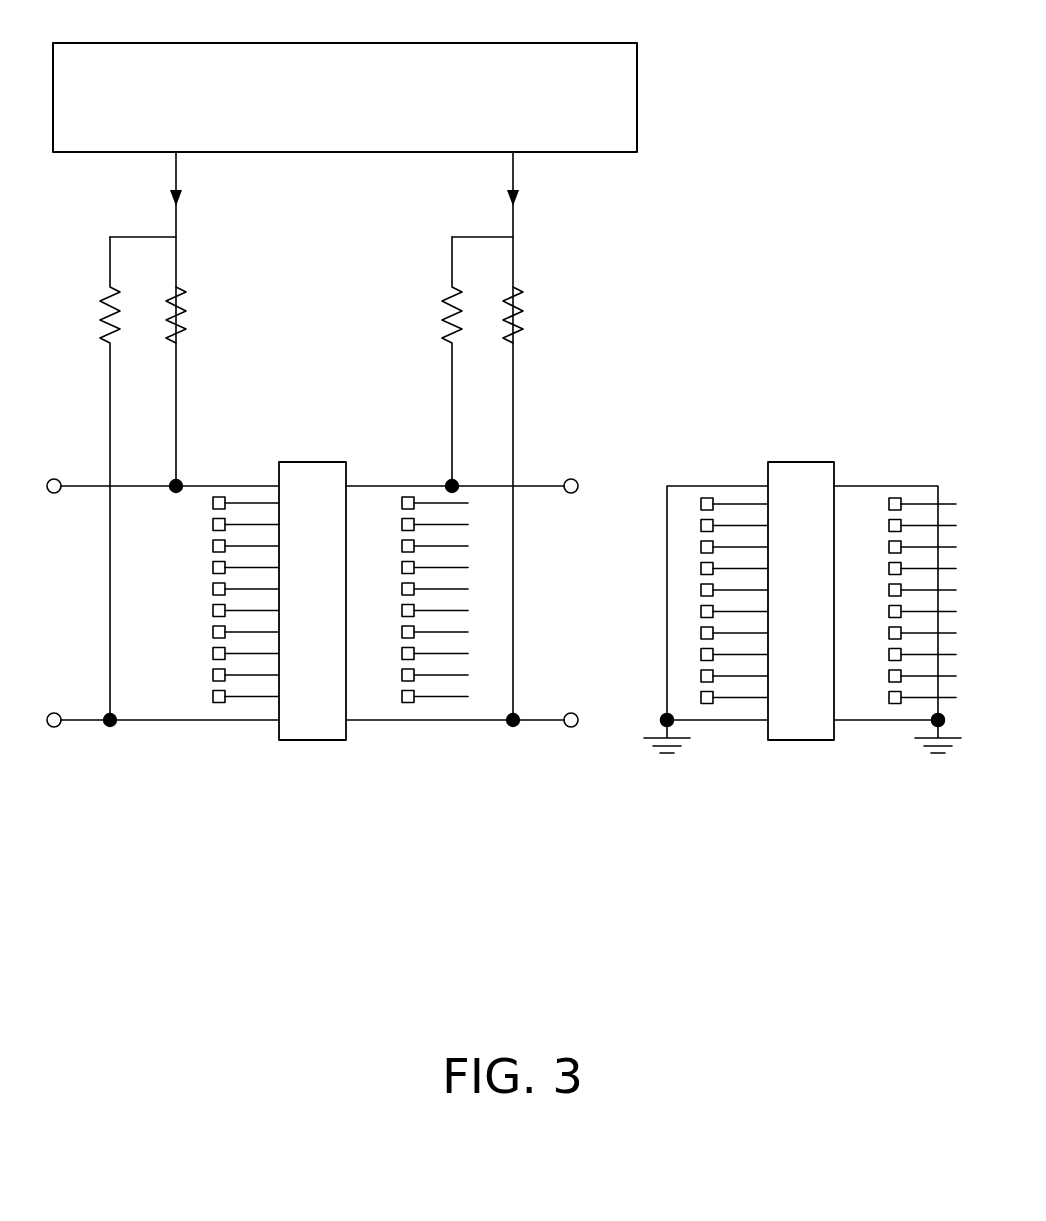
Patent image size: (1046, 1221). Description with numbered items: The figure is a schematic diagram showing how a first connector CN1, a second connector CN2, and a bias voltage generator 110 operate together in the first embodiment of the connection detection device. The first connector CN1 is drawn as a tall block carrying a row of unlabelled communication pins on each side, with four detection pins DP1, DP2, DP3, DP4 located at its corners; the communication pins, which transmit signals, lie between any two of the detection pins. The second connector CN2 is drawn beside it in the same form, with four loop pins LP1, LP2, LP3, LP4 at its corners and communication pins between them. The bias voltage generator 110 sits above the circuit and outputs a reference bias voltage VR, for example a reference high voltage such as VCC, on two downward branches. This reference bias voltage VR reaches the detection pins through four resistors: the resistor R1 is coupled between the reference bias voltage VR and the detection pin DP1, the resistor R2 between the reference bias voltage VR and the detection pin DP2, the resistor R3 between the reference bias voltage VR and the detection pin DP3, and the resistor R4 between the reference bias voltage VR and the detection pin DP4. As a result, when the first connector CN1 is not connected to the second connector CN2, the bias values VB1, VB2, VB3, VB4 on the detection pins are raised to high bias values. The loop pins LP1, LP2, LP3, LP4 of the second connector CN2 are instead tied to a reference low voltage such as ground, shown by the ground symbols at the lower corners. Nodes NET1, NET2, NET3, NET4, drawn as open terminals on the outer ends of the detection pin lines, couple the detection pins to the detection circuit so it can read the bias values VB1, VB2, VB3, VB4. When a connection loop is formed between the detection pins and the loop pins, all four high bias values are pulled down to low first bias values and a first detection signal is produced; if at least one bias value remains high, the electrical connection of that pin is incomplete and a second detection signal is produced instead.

The bias voltage generator 110 is at (637, 101).
The reference bias voltage VR is at (368, 436).
The resistor R1 is at (196, 310).
The resistor R2 is at (119, 478).
The resistor R3 is at (458, 361).
The resistor R4 is at (534, 310).
The node NET1 is at (56, 479).
The node NET2 is at (56, 713).
The node NET3 is at (573, 479).
The node NET4 is at (573, 713).
The bias value VB1 is at (196, 470).
The bias value VB2 is at (116, 739).
The bias value VB3 is at (422, 470).
The bias value VB4 is at (504, 738).
The first connector CN1 is at (337, 602).
The second connector CN2 is at (826, 602).
The detection pin DP1 is at (279, 486).
The detection pin DP2 is at (279, 720).
The detection pin DP3 is at (346, 486).
The detection pin DP4 is at (346, 720).
The loop pin LP1 is at (768, 486).
The loop pin LP2 is at (768, 720).
The loop pin LP3 is at (834, 486).
The loop pin LP4 is at (834, 720).